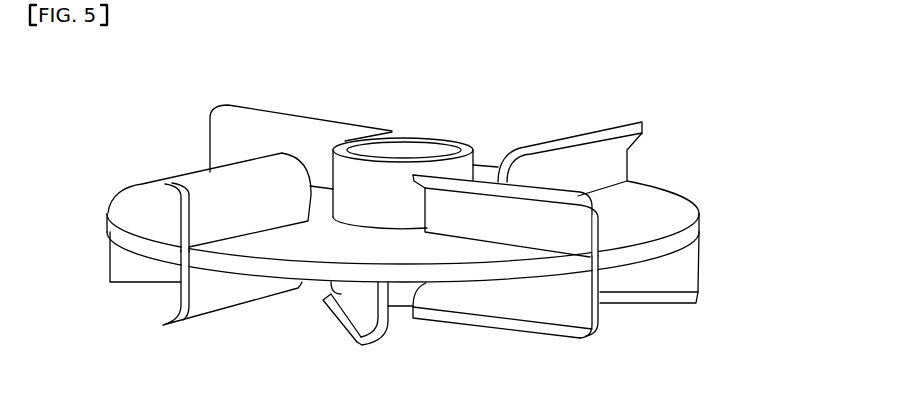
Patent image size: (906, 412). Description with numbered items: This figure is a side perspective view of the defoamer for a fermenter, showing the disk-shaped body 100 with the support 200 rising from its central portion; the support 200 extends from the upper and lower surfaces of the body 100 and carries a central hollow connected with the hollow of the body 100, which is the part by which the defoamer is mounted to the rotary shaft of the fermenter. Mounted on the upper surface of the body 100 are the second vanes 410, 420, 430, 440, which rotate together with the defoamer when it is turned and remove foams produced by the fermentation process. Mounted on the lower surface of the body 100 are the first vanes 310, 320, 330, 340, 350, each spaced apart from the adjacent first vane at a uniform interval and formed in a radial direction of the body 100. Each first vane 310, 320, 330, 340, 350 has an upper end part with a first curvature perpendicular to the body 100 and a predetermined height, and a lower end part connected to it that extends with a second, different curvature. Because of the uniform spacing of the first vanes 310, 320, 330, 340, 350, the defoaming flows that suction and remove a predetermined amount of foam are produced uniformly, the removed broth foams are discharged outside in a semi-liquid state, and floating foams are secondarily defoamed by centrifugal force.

The body 100 is at (700, 228).
The support 200 is at (393, 178).
The first vane 310 is at (685, 270).
The first vane 320 is at (530, 317).
The first vane 330 is at (342, 333).
The first vane 340 is at (208, 298).
The first vane 350 is at (118, 262).
The second vane 410 is at (618, 160).
The second vane 420 is at (500, 207).
The second vane 430 is at (202, 187).
The second vane 440 is at (298, 126).